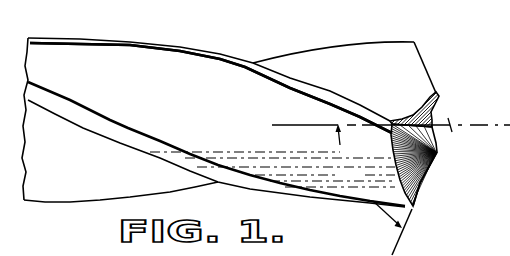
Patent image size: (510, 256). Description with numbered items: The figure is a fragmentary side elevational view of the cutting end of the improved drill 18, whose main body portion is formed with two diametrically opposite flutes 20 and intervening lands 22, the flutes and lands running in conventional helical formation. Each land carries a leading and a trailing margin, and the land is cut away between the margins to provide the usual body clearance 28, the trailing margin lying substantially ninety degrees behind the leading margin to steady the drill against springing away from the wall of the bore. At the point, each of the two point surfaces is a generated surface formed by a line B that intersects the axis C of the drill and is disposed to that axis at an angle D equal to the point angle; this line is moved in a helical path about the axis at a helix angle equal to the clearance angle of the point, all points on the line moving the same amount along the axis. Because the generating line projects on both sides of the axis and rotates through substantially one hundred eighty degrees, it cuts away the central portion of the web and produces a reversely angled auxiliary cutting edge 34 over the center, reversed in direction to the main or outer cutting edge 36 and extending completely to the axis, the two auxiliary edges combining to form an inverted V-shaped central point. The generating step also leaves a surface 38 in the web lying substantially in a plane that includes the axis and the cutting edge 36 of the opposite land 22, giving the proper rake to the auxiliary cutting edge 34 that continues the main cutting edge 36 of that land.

The drill 18 is at (146, 39).
The flutes 20 is at (334, 58).
The lands 22 is at (277, 167).
The body clearance 28 is at (265, 84).
The auxiliary cutting edge 34 is at (436, 136).
The main cutting edge 36 is at (423, 183).
The surface 38 is at (437, 100).
The generating line B is at (398, 252).
The axis C is at (470, 126).
The angle D is at (272, 169).